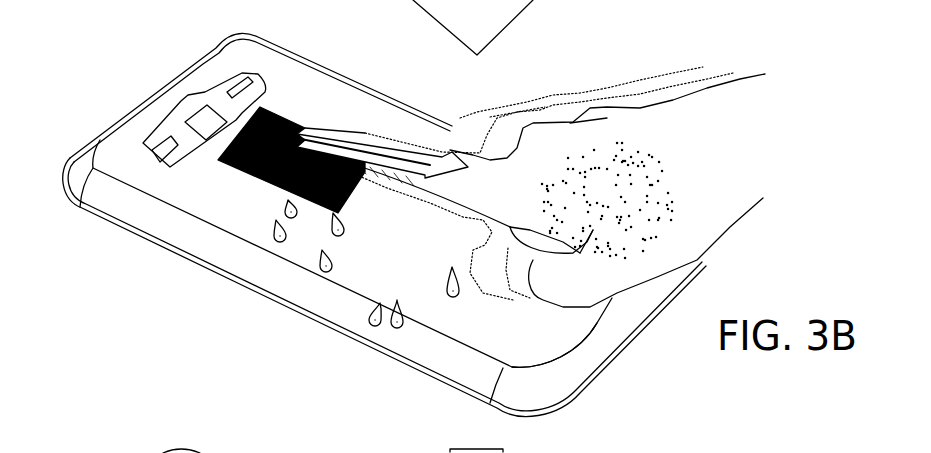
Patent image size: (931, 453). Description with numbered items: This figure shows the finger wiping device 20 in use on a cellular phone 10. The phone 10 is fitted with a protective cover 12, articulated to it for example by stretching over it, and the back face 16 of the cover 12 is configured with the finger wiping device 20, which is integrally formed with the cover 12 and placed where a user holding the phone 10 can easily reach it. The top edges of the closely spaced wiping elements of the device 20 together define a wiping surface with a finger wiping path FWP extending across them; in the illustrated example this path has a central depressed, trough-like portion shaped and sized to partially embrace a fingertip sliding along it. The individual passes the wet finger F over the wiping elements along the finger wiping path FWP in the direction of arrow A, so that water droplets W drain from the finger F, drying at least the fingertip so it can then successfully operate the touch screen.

The cellular phone 10 is at (173, 132).
The protective cover 12 is at (176, 230).
The back face 16 is at (533, 330).
The finger wiping device 20 is at (286, 92).
The finger F is at (413, 155).
The arrow A is at (450, 150).
The water droplets W is at (287, 243).
The finger wiping path FWP is at (398, 197).